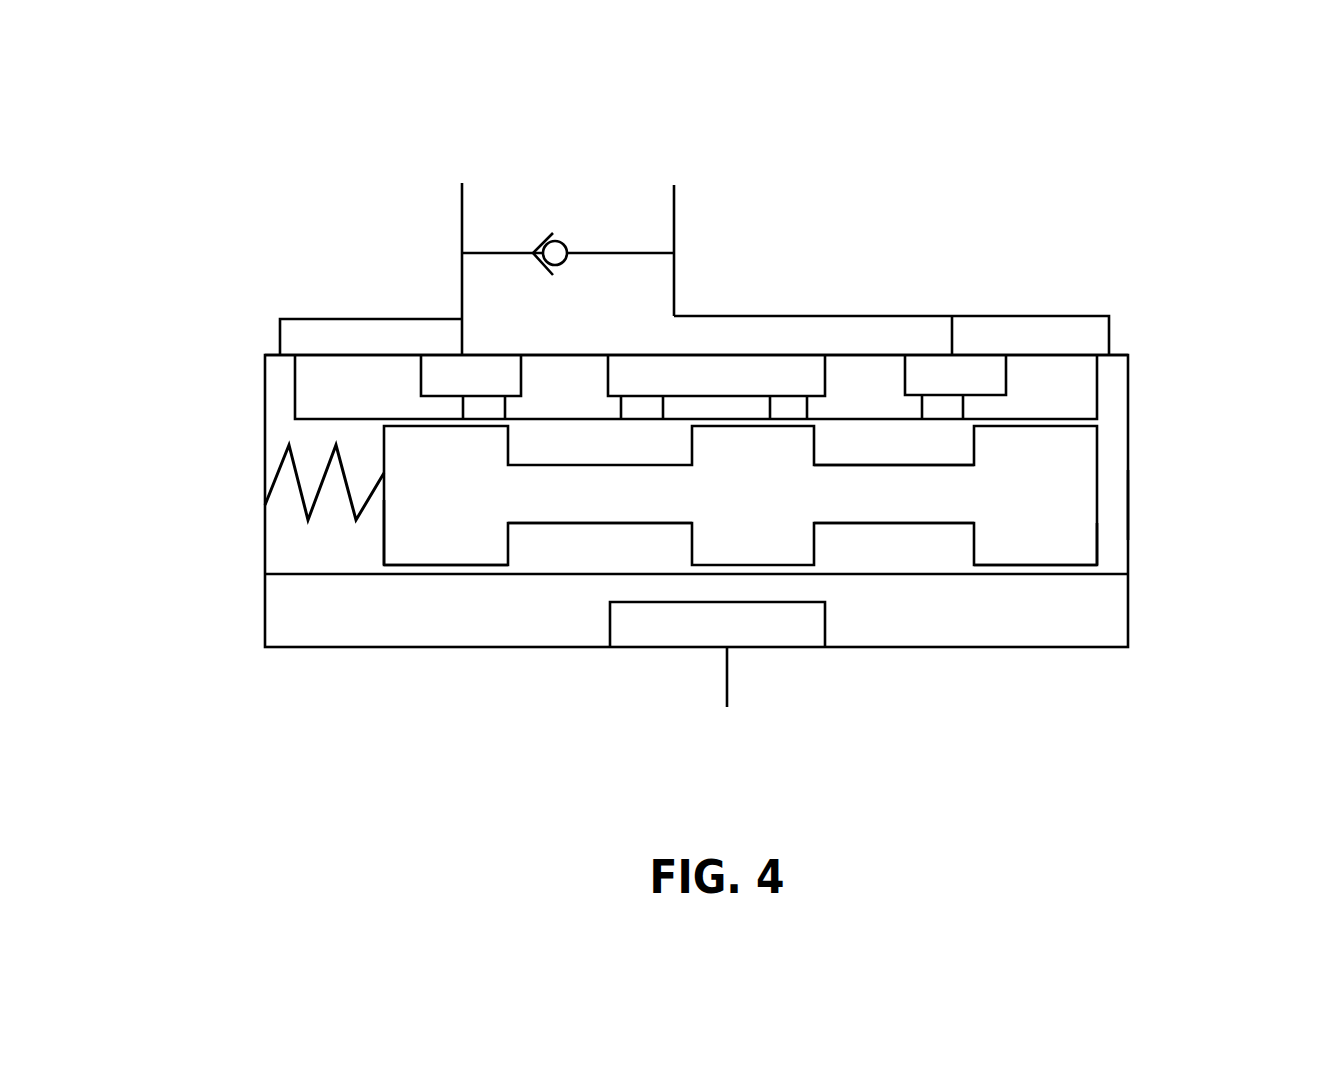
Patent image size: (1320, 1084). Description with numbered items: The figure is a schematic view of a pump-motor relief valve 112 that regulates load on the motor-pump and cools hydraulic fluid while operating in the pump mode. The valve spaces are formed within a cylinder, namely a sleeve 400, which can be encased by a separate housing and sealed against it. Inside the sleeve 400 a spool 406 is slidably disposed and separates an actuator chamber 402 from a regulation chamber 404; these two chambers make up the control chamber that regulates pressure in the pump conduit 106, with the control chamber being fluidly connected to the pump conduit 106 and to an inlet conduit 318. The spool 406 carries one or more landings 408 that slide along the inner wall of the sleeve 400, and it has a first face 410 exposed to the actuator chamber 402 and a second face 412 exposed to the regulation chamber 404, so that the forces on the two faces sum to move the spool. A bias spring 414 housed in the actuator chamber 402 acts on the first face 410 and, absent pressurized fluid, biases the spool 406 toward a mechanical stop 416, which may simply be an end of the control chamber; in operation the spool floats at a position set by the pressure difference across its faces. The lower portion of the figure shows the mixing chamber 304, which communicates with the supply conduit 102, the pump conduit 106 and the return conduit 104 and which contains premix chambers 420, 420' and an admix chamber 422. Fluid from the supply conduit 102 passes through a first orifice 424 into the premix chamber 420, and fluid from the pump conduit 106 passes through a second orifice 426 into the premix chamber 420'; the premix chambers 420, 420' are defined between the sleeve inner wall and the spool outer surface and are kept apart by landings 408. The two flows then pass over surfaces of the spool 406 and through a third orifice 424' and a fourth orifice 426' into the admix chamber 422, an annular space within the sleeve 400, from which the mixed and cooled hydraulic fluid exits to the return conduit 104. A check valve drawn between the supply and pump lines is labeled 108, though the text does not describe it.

The supply conduit 102 is at (462, 227).
The return conduit 104 is at (728, 675).
The pump conduit 106 is at (675, 228).
The check valve 108 is at (548, 212).
The pump-motor relief valve 112 is at (955, 142).
The mixing chamber 304 is at (744, 368).
The inlet conduit 318 is at (278, 333).
The sleeve 400 is at (298, 620).
The actuator chamber 402 is at (287, 552).
The regulation chamber 404 is at (1115, 458).
The spool 406 is at (862, 493).
The landings 408 is at (457, 565).
The first face 410 is at (383, 542).
The second face 412 is at (1100, 547).
The bias spring 414 is at (298, 502).
The mechanical stop 416 is at (1128, 518).
The premix chamber 420 is at (600, 626).
The premix chamber 420' is at (929, 626).
The admix chamber 422 is at (685, 623).
The first orifice 424 is at (439, 341).
The third orifice 424' is at (695, 328).
The second orifice 426 is at (987, 328).
The fourth orifice 426' is at (843, 328).